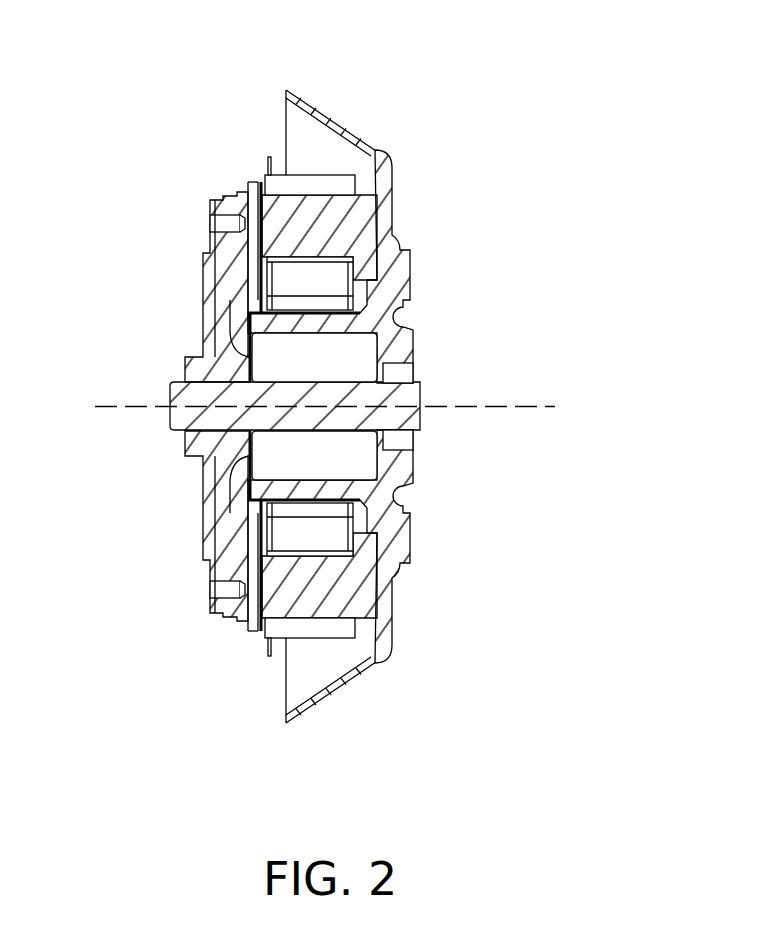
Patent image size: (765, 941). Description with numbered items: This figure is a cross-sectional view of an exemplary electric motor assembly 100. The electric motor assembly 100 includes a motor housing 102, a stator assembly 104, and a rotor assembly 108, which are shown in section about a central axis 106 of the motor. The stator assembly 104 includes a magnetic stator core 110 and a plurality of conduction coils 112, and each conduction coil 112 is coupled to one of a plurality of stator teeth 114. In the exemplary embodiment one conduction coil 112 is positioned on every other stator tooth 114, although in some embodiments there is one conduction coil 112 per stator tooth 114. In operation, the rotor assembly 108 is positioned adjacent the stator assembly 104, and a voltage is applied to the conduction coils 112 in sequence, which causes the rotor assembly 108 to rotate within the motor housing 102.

The electric motor assembly 100 is at (337, 373).
The motor housing 102 is at (410, 333).
The stator assembly 104 is at (380, 145).
The axis of rotation 106 is at (513, 407).
The rotor assembly 108 is at (176, 185).
The magnetic stator core 110 is at (392, 648).
The conduction coil 112 is at (300, 630).
The stator tooth 114 is at (290, 236).